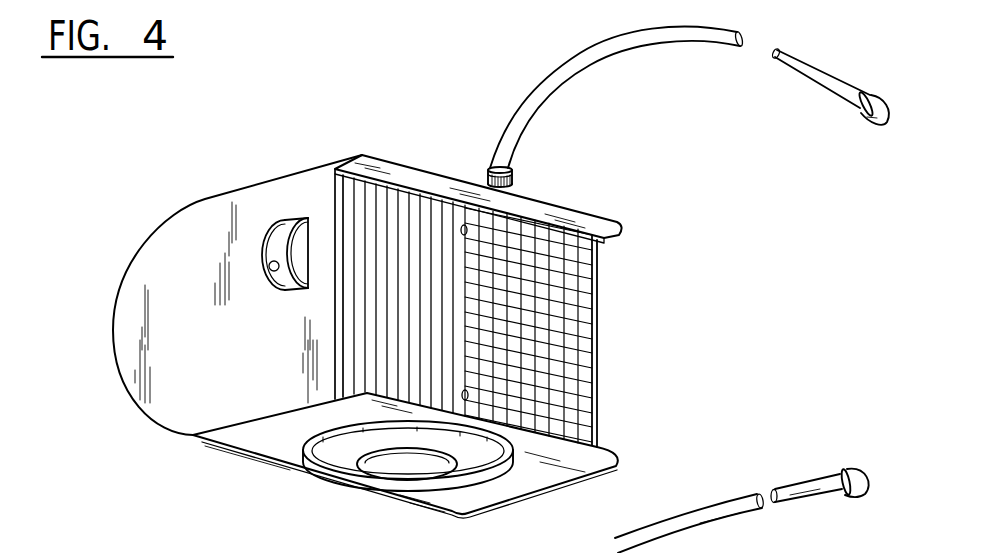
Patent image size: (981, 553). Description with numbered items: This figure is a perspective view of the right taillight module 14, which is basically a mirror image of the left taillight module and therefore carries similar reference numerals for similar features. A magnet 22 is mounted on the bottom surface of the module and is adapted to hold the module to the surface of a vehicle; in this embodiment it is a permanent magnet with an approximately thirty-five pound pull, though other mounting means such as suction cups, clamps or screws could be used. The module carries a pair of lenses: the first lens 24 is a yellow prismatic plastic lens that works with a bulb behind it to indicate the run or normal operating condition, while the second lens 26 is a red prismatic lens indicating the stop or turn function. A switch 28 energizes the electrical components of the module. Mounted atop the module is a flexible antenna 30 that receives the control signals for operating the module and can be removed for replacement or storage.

The right taillight module 14 is at (430, 170).
The magnet 22 is at (340, 473).
The first lens 24 is at (570, 323).
The second lens 26 is at (373, 236).
The switch 28 is at (270, 262).
The antenna 30 is at (590, 65).